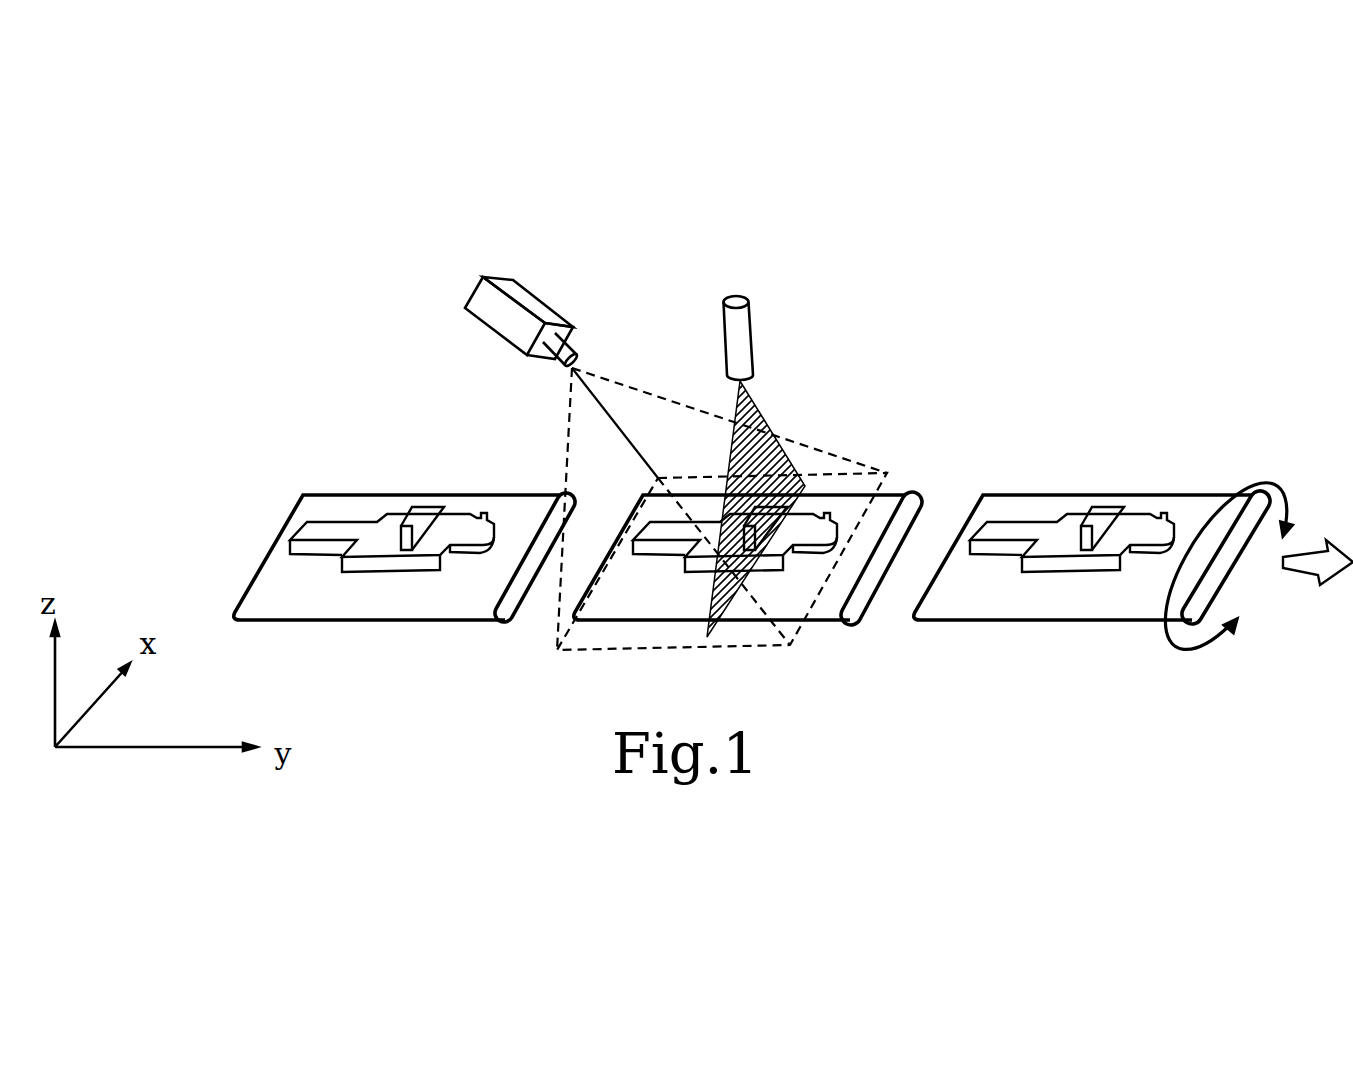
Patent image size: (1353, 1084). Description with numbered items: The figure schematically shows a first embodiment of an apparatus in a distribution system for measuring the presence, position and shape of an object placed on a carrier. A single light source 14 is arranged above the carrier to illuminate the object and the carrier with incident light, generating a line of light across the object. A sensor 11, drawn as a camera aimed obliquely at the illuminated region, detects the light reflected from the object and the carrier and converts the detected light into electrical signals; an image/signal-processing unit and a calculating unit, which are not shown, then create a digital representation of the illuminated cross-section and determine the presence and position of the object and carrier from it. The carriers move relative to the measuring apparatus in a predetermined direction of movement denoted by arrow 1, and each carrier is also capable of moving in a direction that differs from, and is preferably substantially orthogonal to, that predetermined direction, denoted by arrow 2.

The arrow 1 is at (1316, 544).
The arrow 2 is at (1273, 478).
The sensor 11 is at (525, 295).
The light source 14 is at (740, 338).